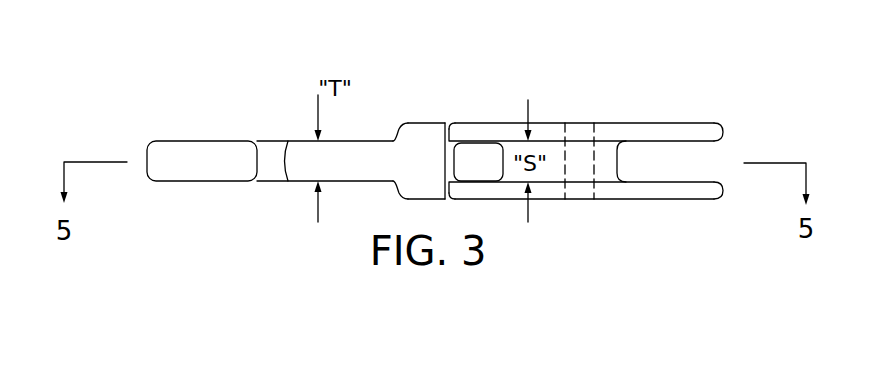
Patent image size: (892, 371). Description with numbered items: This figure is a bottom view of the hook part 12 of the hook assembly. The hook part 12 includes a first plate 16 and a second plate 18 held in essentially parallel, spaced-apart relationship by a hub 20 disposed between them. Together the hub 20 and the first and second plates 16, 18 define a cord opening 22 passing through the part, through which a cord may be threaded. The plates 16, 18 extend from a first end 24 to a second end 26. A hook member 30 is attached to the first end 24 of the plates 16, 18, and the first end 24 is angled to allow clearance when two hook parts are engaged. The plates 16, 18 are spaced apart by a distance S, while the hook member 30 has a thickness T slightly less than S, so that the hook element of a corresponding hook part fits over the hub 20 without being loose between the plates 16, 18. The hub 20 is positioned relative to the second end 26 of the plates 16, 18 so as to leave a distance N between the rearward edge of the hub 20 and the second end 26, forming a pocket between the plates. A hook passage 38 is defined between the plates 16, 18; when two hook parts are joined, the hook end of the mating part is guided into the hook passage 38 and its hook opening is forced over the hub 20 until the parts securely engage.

The hook part 12 is at (270, 91).
The first plate 16 is at (582, 200).
The second plate 18 is at (590, 123).
The hub 20 is at (618, 162).
The cord opening 22 is at (571, 128).
The first end 24 is at (446, 124).
The second end 26 is at (723, 128).
The hook member 30 is at (227, 183).
The hook passage 38 is at (474, 168).